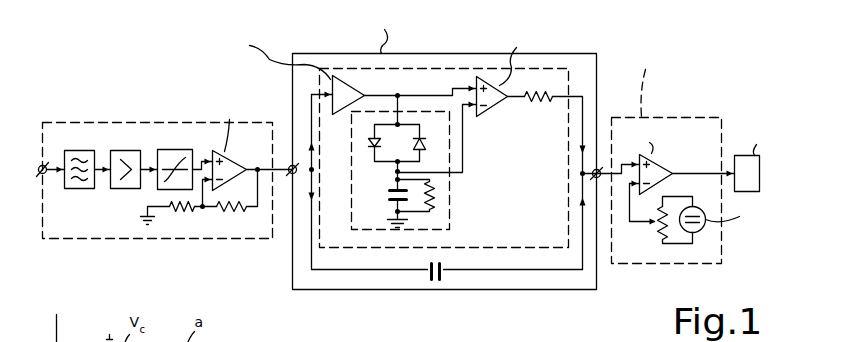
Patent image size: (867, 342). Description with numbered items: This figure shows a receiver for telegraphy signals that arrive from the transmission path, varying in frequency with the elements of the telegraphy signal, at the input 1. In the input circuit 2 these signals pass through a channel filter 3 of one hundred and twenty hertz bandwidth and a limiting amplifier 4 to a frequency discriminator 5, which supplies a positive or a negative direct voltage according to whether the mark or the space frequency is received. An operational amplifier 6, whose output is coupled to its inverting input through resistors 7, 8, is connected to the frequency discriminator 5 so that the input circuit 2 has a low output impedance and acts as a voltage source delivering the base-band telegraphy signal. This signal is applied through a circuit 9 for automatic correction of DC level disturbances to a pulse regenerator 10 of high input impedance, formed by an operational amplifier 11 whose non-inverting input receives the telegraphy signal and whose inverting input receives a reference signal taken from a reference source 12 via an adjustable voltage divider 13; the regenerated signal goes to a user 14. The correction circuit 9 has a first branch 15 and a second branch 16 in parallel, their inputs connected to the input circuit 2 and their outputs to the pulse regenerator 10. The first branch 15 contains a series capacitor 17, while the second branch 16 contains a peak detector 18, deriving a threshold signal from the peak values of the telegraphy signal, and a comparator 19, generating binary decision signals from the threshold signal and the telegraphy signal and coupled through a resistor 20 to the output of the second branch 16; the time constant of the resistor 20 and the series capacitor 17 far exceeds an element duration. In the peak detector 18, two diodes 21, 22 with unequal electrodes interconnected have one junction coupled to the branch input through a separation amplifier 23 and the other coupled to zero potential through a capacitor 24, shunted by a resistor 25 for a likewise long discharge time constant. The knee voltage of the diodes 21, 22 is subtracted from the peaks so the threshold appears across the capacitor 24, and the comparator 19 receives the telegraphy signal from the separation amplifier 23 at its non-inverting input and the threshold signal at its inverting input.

The input 1 is at (42, 164).
The input circuit 2 is at (142, 121).
The channel filter 3 is at (80, 190).
The limiting amplifier 4 is at (128, 190).
The frequency discriminator 5 is at (168, 162).
The operational amplifier 6 is at (236, 158).
The resistor 7 is at (233, 212).
The resistor 8 is at (177, 210).
The circuit for automatic correction of DC level disturbances 9 is at (293, 263).
The pulse regenerator 10 is at (664, 114).
The operational amplifier 11 is at (657, 165).
The reference source 12 is at (704, 225).
The adjustable voltage divider 13 is at (656, 226).
The user 14 is at (745, 154).
The first branch 15 is at (446, 169).
The second branch 16 is at (331, 78).
The series capacitor 17 is at (441, 258).
The peak detector 18 is at (452, 210).
The comparator 19 is at (505, 107).
The resistor 20 is at (547, 103).
The diode 21 is at (375, 148).
The diode 22 is at (427, 143).
The separation amplifier 23 is at (355, 86).
The capacitor 24 is at (390, 195).
The resistor 25 is at (436, 190).